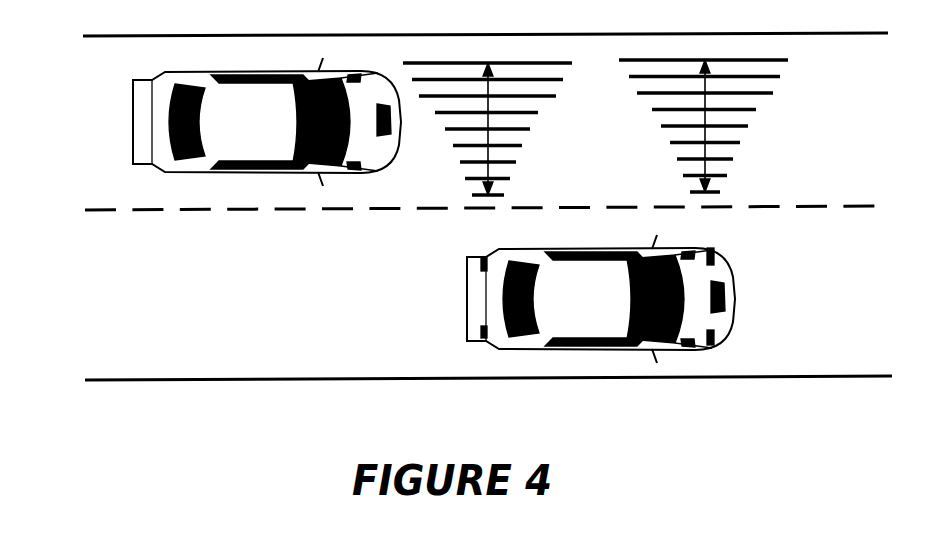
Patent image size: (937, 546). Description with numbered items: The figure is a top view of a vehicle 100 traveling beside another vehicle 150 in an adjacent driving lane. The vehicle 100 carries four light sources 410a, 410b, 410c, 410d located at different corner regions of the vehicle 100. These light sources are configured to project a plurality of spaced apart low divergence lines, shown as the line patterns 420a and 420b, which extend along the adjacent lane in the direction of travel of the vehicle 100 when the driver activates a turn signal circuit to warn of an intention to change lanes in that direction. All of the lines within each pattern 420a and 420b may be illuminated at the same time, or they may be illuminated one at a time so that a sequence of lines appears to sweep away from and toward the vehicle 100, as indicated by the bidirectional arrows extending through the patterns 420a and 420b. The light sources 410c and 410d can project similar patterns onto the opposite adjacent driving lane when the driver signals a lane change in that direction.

The vehicle 150 is at (99, 122).
The vehicle 100 is at (401, 300).
The light source 410a is at (481, 262).
The light source 410b is at (714, 258).
The light source 410c is at (481, 333).
The light source 410d is at (714, 342).
The line pattern 420a is at (556, 138).
The line pattern 420b is at (776, 136).